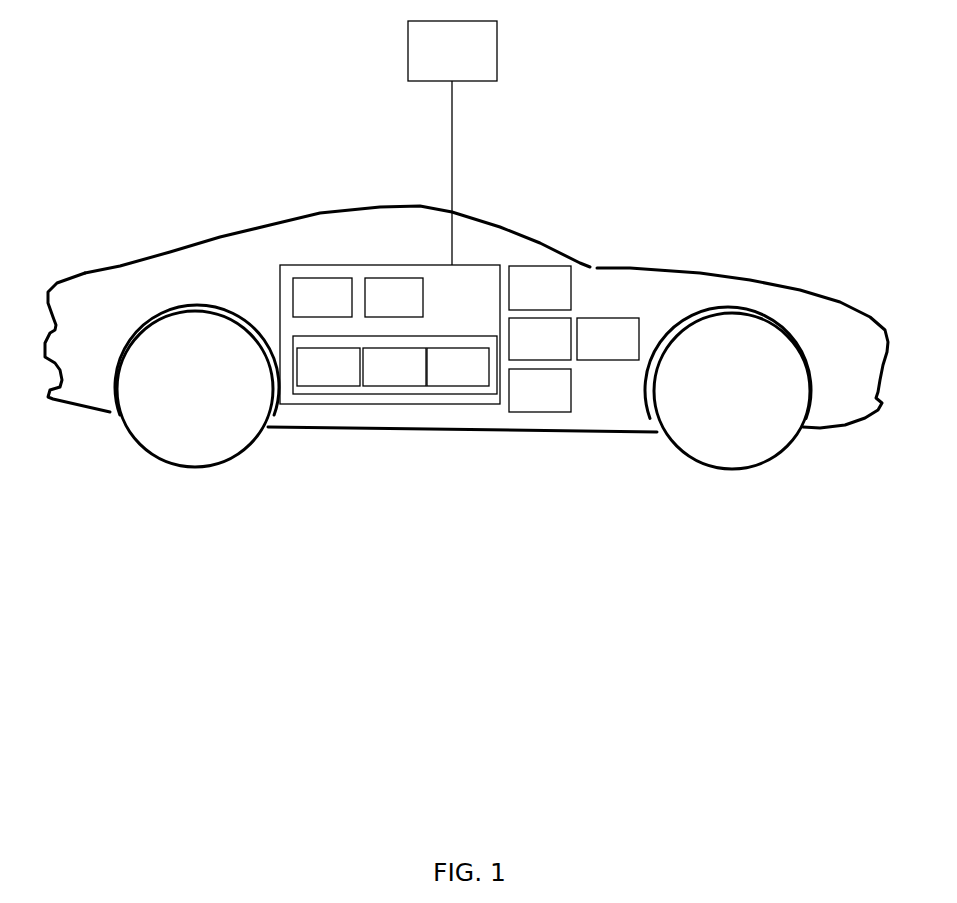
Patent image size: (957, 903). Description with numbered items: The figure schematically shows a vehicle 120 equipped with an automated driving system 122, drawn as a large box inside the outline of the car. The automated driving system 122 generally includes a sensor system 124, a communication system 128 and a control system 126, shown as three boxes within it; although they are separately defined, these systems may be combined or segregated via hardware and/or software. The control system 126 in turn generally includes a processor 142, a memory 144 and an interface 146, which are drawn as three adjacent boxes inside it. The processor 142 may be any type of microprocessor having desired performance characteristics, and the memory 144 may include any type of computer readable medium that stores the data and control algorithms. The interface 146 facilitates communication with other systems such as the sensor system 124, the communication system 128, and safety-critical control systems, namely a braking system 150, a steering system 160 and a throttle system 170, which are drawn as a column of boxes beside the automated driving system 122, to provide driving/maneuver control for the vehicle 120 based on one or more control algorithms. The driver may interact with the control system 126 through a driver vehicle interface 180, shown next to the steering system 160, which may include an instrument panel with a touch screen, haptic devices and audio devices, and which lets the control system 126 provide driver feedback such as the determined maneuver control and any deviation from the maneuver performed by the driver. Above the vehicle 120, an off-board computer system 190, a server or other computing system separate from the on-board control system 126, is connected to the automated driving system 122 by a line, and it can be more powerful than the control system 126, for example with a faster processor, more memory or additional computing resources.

The vehicle 120 is at (78, 271).
The automated driving system 122 is at (407, 404).
The sensor system 124 is at (310, 275).
The control system 126 is at (303, 397).
The communication system 128 is at (382, 275).
The processor 142 is at (311, 378).
The memory 144 is at (377, 378).
The interface 146 is at (440, 378).
The braking system 150 is at (522, 300).
The steering system 160 is at (522, 350).
The throttle system 170 is at (522, 402).
The driver vehicle interface 180 is at (590, 350).
The off-board computer system 190 is at (434, 62).